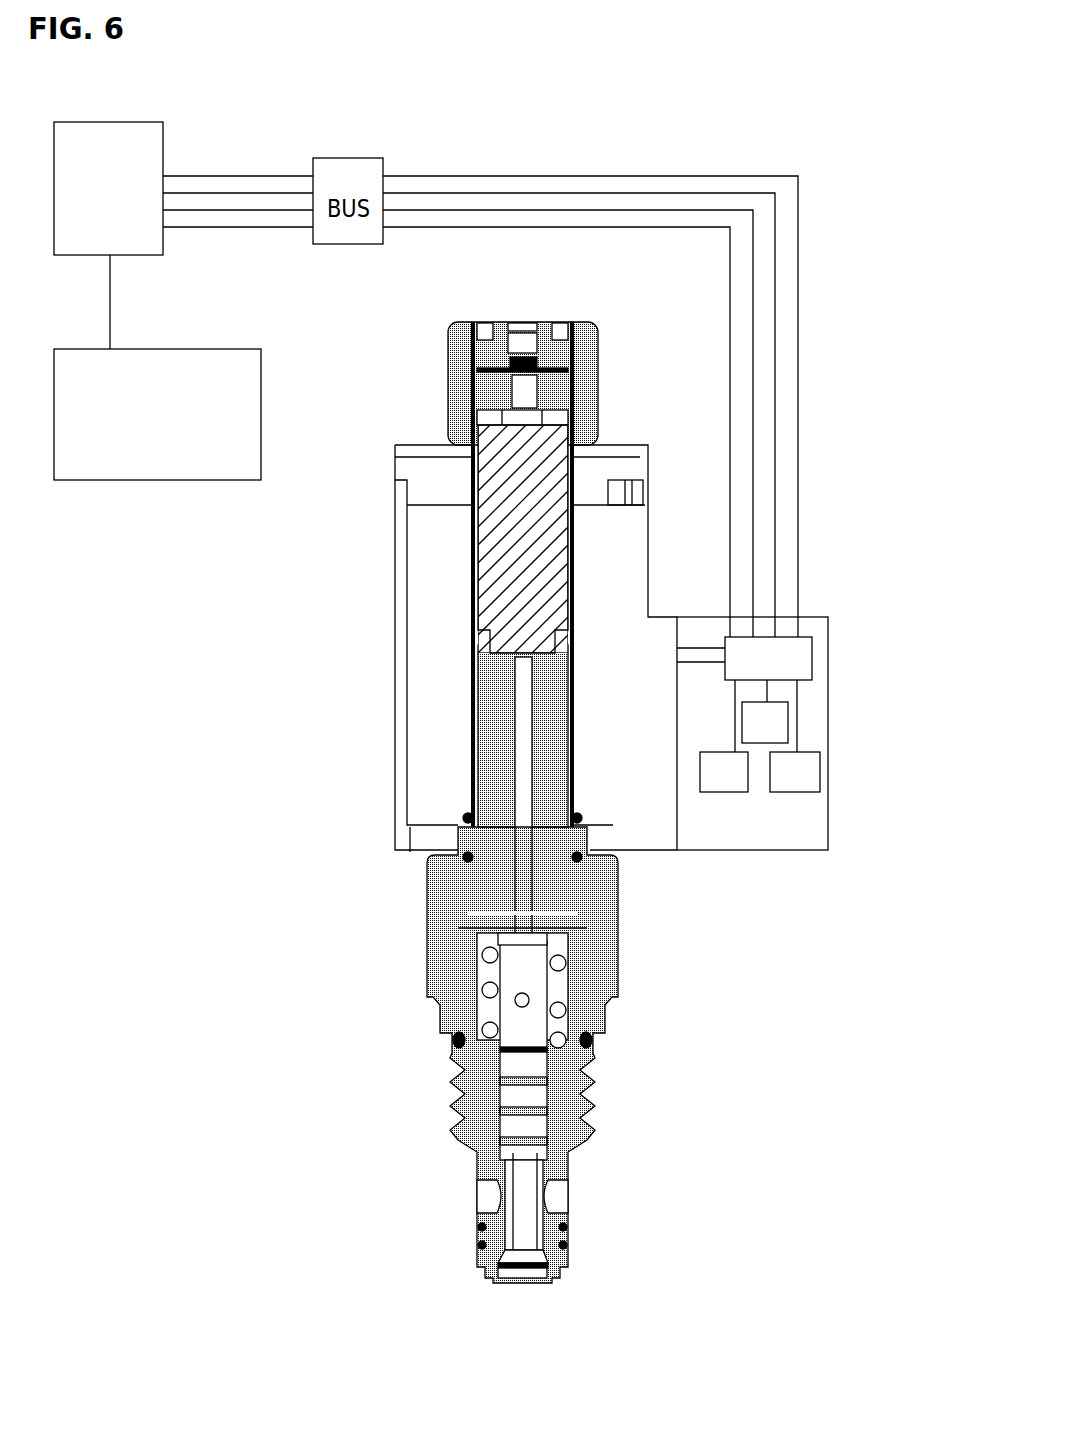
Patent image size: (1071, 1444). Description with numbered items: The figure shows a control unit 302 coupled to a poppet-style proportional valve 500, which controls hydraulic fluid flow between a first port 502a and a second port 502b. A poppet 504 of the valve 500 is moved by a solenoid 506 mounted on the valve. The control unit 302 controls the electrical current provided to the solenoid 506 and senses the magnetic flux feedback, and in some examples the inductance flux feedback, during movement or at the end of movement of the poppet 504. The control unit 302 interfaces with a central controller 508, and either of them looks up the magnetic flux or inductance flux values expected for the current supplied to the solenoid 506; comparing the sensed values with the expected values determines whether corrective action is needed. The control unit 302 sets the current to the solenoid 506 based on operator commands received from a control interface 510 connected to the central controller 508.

The central controller 508 is at (163, 142).
The control interface 510 is at (217, 349).
The solenoid 506 is at (395, 638).
The poppet-style proportional valve 500 is at (415, 949).
The control unit 302 is at (842, 738).
The second port 502b is at (560, 1187).
The first port 502a is at (537, 1275).
The poppet 504 is at (512, 1232).